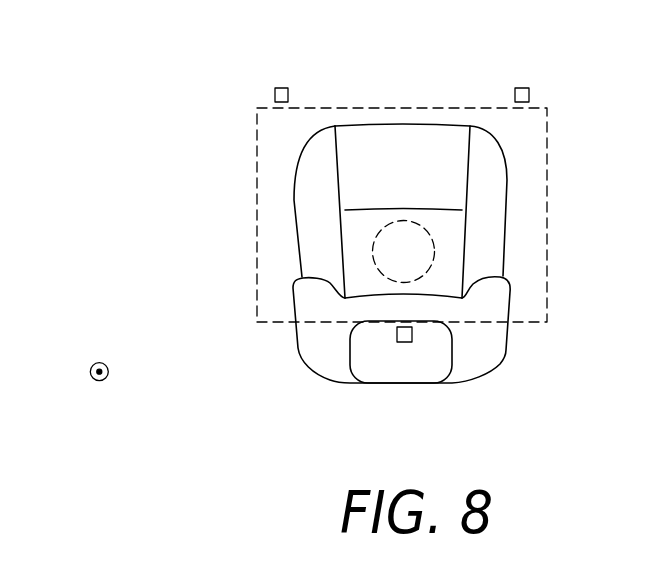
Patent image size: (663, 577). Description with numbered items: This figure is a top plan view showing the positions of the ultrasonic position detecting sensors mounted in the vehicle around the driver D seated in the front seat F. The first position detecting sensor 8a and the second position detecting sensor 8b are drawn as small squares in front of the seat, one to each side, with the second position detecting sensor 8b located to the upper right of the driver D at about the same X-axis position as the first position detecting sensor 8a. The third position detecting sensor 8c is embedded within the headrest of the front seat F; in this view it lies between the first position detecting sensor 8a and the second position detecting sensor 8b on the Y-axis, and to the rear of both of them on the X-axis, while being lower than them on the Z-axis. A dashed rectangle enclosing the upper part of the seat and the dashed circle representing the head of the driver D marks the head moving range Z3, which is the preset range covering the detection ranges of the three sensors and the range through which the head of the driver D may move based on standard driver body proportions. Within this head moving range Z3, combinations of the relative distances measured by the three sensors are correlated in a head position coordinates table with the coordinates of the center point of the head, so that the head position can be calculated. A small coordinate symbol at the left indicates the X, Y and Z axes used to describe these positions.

The front seat F is at (506, 354).
The head moving range Z3 is at (405, 107).
The driver D is at (403, 220).
The first position detecting sensor 8a is at (281, 87).
The second position detecting sensor 8b is at (522, 87).
The third position detecting sensor 8c is at (403, 343).
The X-axis X is at (99, 363).
The Y-axis Y is at (108, 372).
The Z-axis Z is at (90, 372).